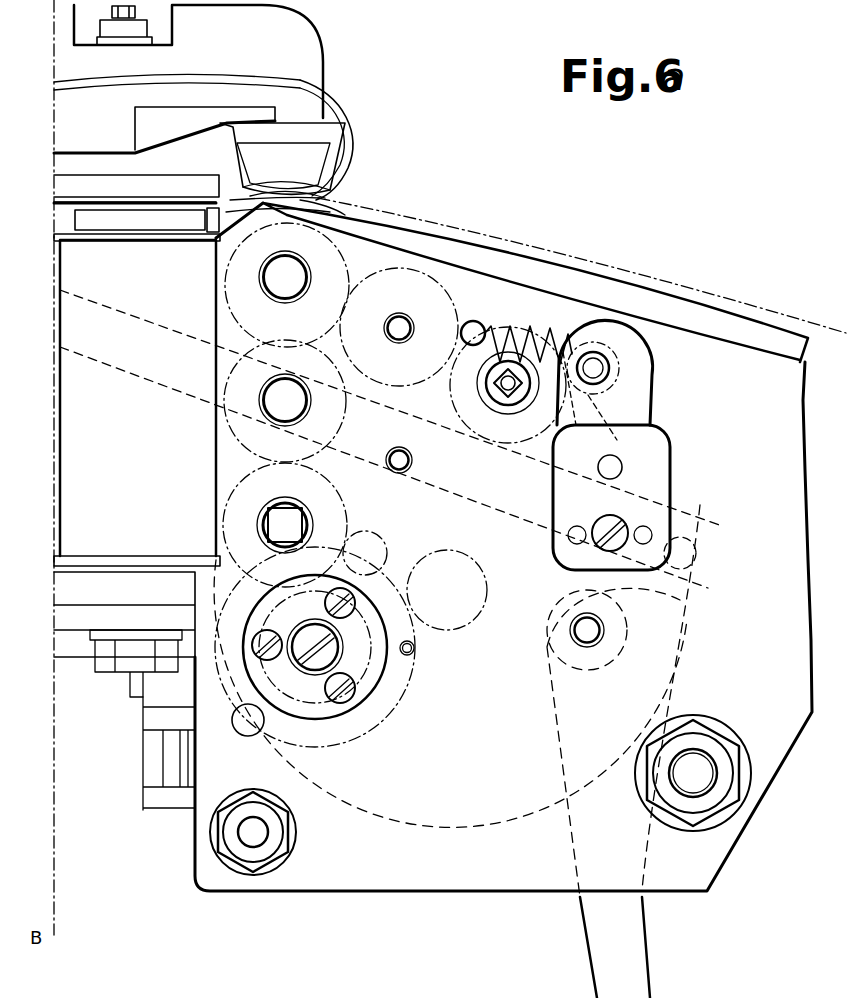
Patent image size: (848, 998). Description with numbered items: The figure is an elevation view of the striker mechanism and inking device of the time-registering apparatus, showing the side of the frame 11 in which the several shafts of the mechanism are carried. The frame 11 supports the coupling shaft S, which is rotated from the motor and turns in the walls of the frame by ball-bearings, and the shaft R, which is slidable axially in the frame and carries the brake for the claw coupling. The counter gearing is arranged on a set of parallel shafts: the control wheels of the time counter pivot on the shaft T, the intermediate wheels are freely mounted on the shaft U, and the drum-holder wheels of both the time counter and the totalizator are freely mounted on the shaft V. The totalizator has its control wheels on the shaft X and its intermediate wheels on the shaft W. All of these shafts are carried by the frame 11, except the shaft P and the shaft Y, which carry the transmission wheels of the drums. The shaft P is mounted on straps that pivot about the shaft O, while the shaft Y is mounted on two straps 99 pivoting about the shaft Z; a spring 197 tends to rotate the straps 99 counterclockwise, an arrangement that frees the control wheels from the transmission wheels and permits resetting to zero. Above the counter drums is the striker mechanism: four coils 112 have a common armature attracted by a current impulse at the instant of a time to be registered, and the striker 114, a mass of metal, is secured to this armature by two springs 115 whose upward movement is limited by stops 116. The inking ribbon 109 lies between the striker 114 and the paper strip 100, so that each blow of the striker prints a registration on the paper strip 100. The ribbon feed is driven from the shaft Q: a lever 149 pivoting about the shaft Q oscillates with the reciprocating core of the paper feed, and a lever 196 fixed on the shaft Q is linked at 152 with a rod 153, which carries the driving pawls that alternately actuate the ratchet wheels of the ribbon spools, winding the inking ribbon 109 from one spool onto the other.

The frame 11 is at (333, 877).
The straps 99 is at (620, 398).
The paper strip 100 is at (573, 270).
The inking ribbon 109 is at (352, 168).
The coils 112 is at (87, 470).
The striker 114 is at (305, 157).
The springs 115 is at (187, 127).
The stops 116 is at (245, 93).
The lever 149 is at (637, 947).
The link 152 is at (685, 555).
The rod 153 is at (447, 578).
The lever 196 is at (650, 606).
The spring 197 is at (513, 330).
The shaft V is at (295, 280).
The shaft W is at (405, 325).
The shaft U is at (290, 395).
The shaft X is at (516, 372).
The shaft Y is at (600, 366).
The shaft Z is at (615, 467).
The shaft O is at (405, 462).
The shaft T is at (297, 525).
The shaft P is at (378, 546).
The coupling shaft S is at (330, 652).
The shaft Q is at (592, 634).
The shaft R is at (248, 726).